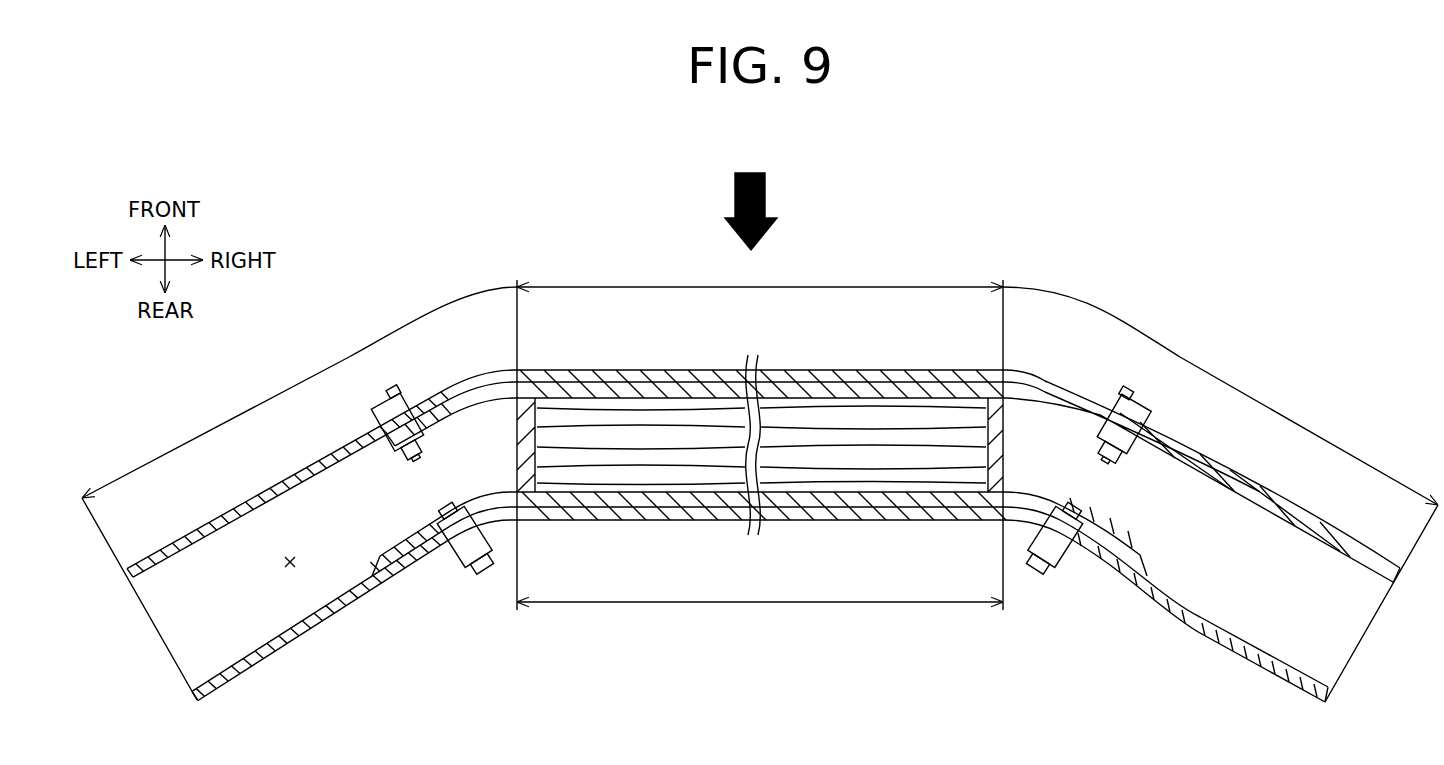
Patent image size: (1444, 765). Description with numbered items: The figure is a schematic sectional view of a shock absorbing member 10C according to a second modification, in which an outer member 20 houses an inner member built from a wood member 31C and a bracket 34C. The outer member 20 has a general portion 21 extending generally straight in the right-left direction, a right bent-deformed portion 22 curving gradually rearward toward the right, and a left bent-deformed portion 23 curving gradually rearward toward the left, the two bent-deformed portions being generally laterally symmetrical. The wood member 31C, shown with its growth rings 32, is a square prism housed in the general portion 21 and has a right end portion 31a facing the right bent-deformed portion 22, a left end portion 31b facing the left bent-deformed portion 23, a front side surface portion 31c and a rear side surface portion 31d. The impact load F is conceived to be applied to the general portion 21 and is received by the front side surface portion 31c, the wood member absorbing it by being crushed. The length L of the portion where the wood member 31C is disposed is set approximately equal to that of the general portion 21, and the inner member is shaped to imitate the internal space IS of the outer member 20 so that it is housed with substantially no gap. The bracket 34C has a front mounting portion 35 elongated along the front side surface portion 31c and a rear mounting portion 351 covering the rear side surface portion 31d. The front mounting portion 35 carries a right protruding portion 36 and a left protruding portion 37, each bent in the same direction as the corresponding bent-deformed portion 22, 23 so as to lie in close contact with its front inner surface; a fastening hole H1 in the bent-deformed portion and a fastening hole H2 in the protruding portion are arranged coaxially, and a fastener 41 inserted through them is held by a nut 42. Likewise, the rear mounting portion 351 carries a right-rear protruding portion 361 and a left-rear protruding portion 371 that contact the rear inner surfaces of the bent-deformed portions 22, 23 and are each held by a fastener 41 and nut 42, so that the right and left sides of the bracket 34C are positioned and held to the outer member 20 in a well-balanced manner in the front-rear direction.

The shock absorbing member 10C is at (1130, 275).
The outer member 20 is at (262, 478).
The general portion 21 is at (760, 436).
The right bent-deformed portion 22 is at (1225, 372).
The left bent-deformed portion 23 is at (287, 381).
The right end portion 31a is at (1005, 449).
The left end portion 31b is at (518, 447).
The front side surface portion 31c is at (548, 500).
The rear side surface portion 31d is at (606, 500).
The wood member 31C is at (665, 500).
The growth rings 32 is at (945, 475).
The bracket 34C is at (583, 386).
The front mounting portion 35 is at (880, 384).
The rear mounting portion 351 is at (760, 522).
The right protruding portion 36 is at (1174, 460).
The right-rear protruding portion 361 is at (1110, 560).
The left protruding portion 37 is at (337, 448).
The left-rear protruding portion 371 is at (433, 562).
The fastener 41 is at (388, 400).
The nut 42 is at (445, 514).
The fastening hole H1 is at (394, 393).
The fastening hole H2 is at (412, 446).
The impact load F is at (767, 186).
The internal space IS is at (295, 565).
The length L is at (760, 618).